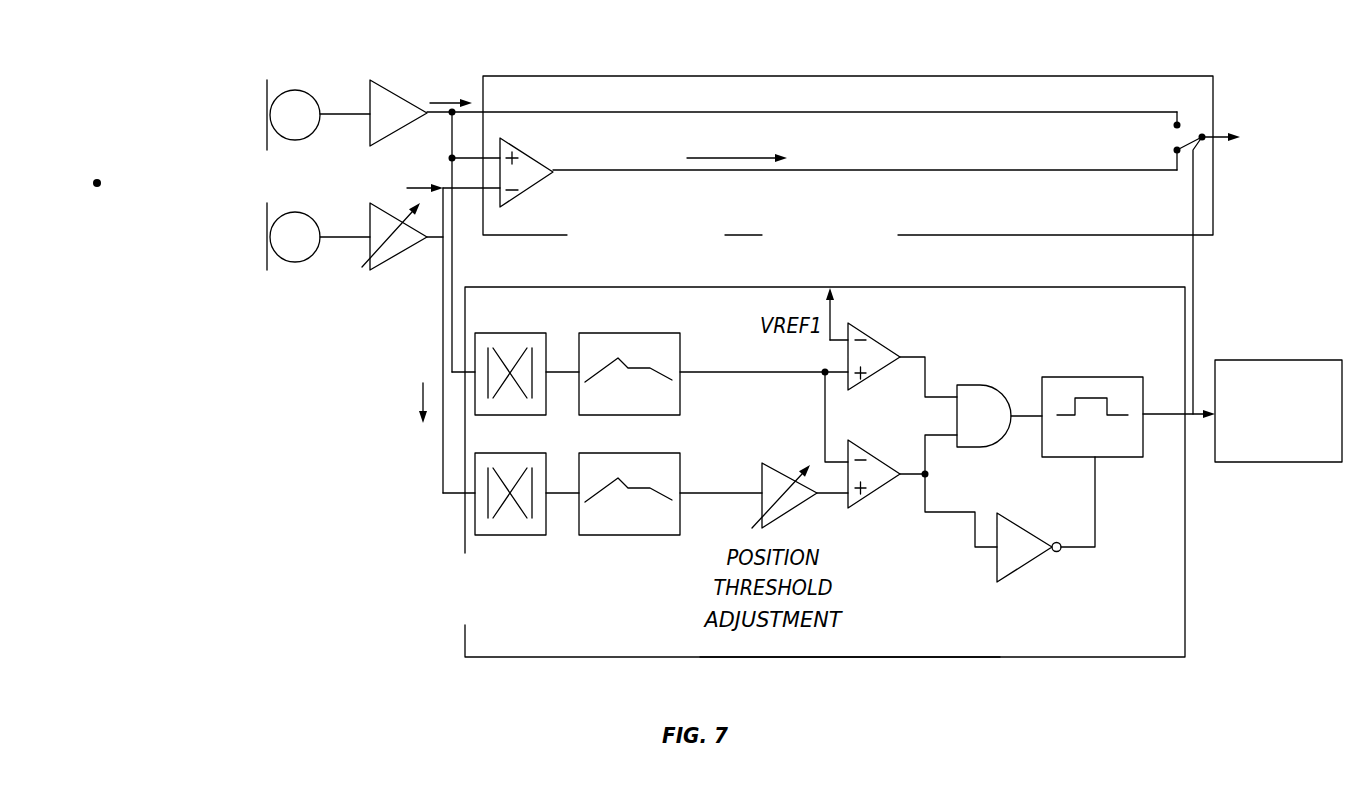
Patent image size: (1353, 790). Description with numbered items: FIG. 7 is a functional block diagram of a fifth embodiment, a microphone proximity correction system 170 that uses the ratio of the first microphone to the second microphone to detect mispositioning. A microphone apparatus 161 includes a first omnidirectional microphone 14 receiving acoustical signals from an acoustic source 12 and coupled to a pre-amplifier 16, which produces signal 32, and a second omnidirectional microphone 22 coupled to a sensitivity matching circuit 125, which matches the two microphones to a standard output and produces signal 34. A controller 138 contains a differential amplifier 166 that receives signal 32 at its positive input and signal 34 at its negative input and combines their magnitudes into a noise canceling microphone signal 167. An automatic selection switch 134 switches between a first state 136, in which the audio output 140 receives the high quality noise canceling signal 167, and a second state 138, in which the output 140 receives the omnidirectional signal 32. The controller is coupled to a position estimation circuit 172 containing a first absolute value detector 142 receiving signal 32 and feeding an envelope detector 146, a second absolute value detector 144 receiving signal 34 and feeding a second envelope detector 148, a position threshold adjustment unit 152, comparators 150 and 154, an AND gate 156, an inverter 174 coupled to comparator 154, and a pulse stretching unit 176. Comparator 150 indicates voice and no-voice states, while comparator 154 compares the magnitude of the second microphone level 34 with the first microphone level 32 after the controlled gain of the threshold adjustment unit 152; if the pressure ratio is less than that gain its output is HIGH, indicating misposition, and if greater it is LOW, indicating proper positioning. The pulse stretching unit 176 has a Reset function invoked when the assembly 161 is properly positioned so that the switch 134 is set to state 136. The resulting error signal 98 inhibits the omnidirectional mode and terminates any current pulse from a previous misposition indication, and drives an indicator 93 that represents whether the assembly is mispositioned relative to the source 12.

The acoustic source 12 is at (97, 183).
The first microphone 14 is at (297, 88).
The pre-amplifier 16 is at (393, 95).
The second microphone 22 is at (290, 262).
The signal 32 is at (447, 100).
The signal 34 is at (424, 180).
The indicator 93 is at (1280, 463).
The error signal 98 is at (1197, 260).
The sensitivity matching circuit 125 is at (362, 348).
The automatic selection switch 134 is at (1205, 140).
The first state 136 is at (1177, 150).
The controller 138 is at (1193, 72).
The output signal 140 is at (1288, 148).
The first absolute value detector 142 is at (512, 333).
The second absolute value detector 144 is at (462, 508).
The envelope detector 146 is at (644, 333).
The second envelope detector 148 is at (682, 515).
The comparator 150 is at (887, 343).
The position threshold adjustment unit 152 is at (770, 633).
The comparator 154 is at (890, 543).
The AND gate 156 is at (977, 447).
The microphone apparatus 161 is at (154, 322).
The differential amplifier 166 is at (530, 152).
The NC microphone signal 167 is at (730, 155).
The system 170 is at (237, 614).
The position estimation circuit 172 is at (1128, 658).
The inverter 174 is at (1020, 567).
The pulse stretching unit 176 is at (1147, 445).